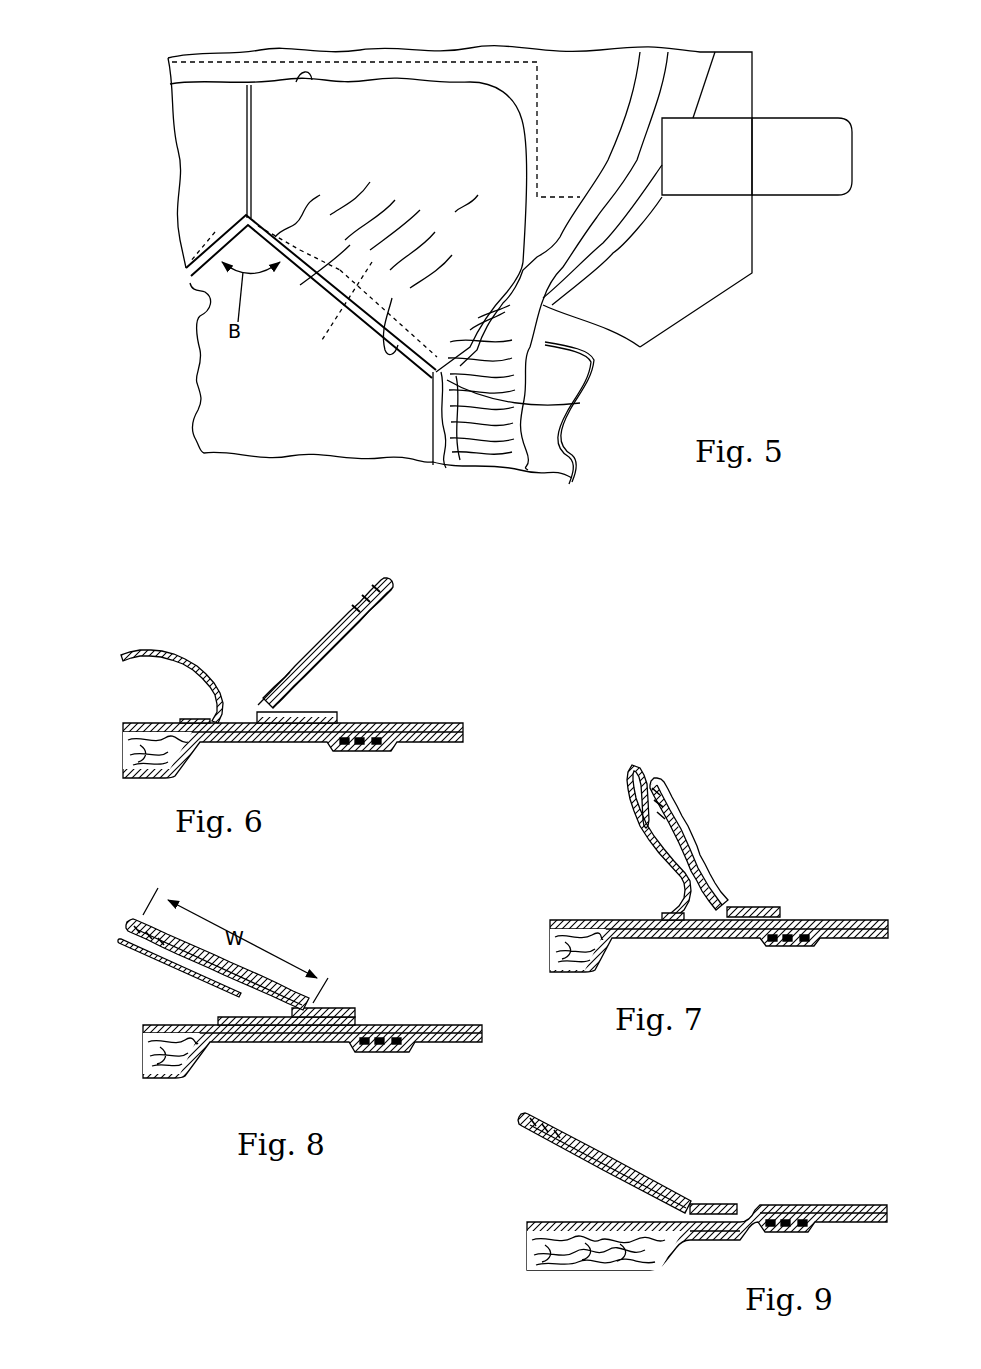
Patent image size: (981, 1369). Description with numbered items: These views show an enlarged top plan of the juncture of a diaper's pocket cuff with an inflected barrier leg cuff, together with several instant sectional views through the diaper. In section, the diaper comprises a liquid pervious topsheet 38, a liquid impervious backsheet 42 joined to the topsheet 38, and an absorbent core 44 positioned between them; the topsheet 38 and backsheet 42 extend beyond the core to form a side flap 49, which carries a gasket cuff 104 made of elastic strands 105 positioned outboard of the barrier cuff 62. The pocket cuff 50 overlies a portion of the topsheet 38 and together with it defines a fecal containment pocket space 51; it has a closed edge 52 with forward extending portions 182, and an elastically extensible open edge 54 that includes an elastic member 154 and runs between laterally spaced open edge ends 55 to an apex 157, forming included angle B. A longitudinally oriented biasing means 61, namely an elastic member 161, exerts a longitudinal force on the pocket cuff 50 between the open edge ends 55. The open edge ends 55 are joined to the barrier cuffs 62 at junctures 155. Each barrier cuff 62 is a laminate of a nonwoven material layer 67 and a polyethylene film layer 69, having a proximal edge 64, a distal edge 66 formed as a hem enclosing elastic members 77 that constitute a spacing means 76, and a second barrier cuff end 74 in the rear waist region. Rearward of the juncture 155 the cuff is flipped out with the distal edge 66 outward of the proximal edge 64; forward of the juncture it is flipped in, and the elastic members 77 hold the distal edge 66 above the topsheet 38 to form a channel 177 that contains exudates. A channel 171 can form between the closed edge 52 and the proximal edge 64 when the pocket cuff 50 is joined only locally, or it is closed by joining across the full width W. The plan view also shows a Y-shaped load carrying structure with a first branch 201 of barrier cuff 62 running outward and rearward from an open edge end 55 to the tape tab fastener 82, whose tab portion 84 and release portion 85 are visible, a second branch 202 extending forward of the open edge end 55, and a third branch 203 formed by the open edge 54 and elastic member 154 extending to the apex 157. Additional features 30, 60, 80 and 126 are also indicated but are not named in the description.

In FIG. 5, the panel 30 is at (574, 450).
In FIG. 6, the panel 30 is at (463, 738).
In FIG. 7, the panel 30 is at (719, 946).
In FIG. 8, the panel 30 is at (482, 1030).
In FIG. 9, the panel 30 is at (707, 1237).
In FIG. 6, the topsheet 38 is at (128, 725).
In FIG. 7, the topsheet 38 is at (578, 921).
In FIG. 8, the topsheet 38 is at (215, 1017).
In FIG. 9, the topsheet 38 is at (548, 1222).
In FIG. 6, the backsheet 42 is at (140, 774).
In FIG. 7, the backsheet 42 is at (838, 940).
In FIG. 8, the backsheet 42 is at (168, 1077).
In FIG. 9, the backsheet 42 is at (545, 1270).
In FIG. 6, the absorbent core 44 is at (132, 753).
In FIG. 7, the absorbent core 44 is at (562, 947).
In FIG. 8, the absorbent core 44 is at (145, 1052).
In FIG. 9, the absorbent core 44 is at (540, 1238).
In FIG. 6, the side flap 49 is at (325, 746).
In FIG. 8, the side flap 49 is at (310, 1046).
In FIG. 9, the side flap 49 is at (795, 1200).
In FIG. 5, the pocket cuff 50 is at (275, 100).
In FIG. 6, the pocket cuff 50 is at (163, 655).
In FIG. 7, the pocket cuff 50 is at (628, 832).
In FIG. 8, the pocket cuff 50 is at (150, 960).
In FIG. 6, the fecal containment pocket space 51 is at (165, 688).
In FIG. 5, the closed edge 52 is at (300, 85).
In FIG. 6, the closed edge 52 is at (183, 716).
In FIG. 7, the closed edge 52 is at (660, 913).
In FIG. 8, the closed edge 52 is at (215, 1016).
In FIG. 5, the open edge 54 is at (193, 312).
In FIG. 7, the open edge 54 is at (622, 766).
In FIG. 5, the open edge ends 55 is at (423, 377).
In FIG. 7, the open edge ends 55 is at (635, 768).
In FIG. 5, the pleat 60 is at (460, 340).
In FIG. 5, the longitudinally oriented biasing means 61 is at (262, 158).
In FIG. 5, the barrier cuff 62 is at (488, 437).
In FIG. 6, the barrier cuff 62 is at (332, 613).
In FIG. 7, the barrier cuff 62 is at (705, 842).
In FIG. 8, the barrier cuff 62 is at (228, 917).
In FIG. 9, the barrier cuff 62 is at (610, 1145).
In FIG. 5, the proximal edge 64 is at (633, 82).
In FIG. 6, the proximal edge 64 is at (347, 708).
In FIG. 7, the proximal edge 64 is at (782, 905).
In FIG. 8, the proximal edge 64 is at (345, 1005).
In FIG. 9, the proximal edge 64 is at (745, 1197).
In FIG. 5, the distal edge 66 is at (442, 460).
In FIG. 6, the distal edge 66 is at (402, 582).
In FIG. 7, the distal edge 66 is at (663, 770).
In FIG. 8, the distal edge 66 is at (130, 920).
In FIG. 9, the distal edge 66 is at (512, 1126).
In FIG. 5, the nonwoven material layer 67 is at (633, 208).
In FIG. 6, the nonwoven material layer 67 is at (332, 656).
In FIG. 7, the nonwoven material layer 67 is at (690, 832).
In FIG. 9, the nonwoven material layer 67 is at (645, 1192).
In FIG. 5, the polyethylene film layer 69 is at (635, 127).
In FIG. 6, the polyethylene film layer 69 is at (285, 670).
In FIG. 7, the polyethylene film layer 69 is at (727, 930).
In FIG. 9, the polyethylene film layer 69 is at (683, 1204).
In FIG. 5, the second barrier cuff end 74 is at (685, 75).
In FIG. 6, the spacing means 76 is at (398, 610).
In FIG. 9, the spacing means 76 is at (518, 1112).
In FIG. 6, the elastic members 77 is at (374, 590).
In FIG. 7, the elastic members 77 is at (665, 818).
In FIG. 8, the elastic members 77 is at (140, 945).
In FIG. 9, the elastic members 77 is at (550, 1130).
In FIG. 5, the label assembly 80 is at (776, 85).
In FIG. 5, the tape tab fastener 82 is at (792, 118).
In FIG. 5, the tab portion 84 is at (802, 165).
In FIG. 5, the release portion 85 is at (712, 165).
In FIG. 6, the gasket cuff 104 is at (388, 720).
In FIG. 7, the gasket cuff 104 is at (808, 920).
In FIG. 6, the elastic strands 105 is at (378, 742).
In FIG. 7, the elastic strands 105 is at (792, 942).
In FIG. 8, the elastic strands 105 is at (386, 1042).
In FIG. 9, the elastic strands 105 is at (800, 1222).
In FIG. 5, the region 126 is at (552, 82).
In FIG. 5, the elastic member 154 is at (215, 232).
In FIG. 7, the elastic member 154 is at (625, 780).
In FIG. 5, the junctures 155 is at (580, 403).
In FIG. 7, the junctures 155 is at (650, 766).
In FIG. 5, the apex 157 is at (273, 245).
In FIG. 5, the elastic member 161 is at (246, 143).
In FIG. 7, the channel 171 is at (700, 908).
In FIG. 8, the channel 177 is at (240, 1003).
In FIG. 9, the channel 177 is at (555, 1270).
In FIG. 5, the forward extending portions 182 is at (520, 190).
In FIG. 5, the first branch 201 is at (472, 347).
In FIG. 5, the second branch 202 is at (422, 433).
In FIG. 5, the third branch 203 is at (414, 358).